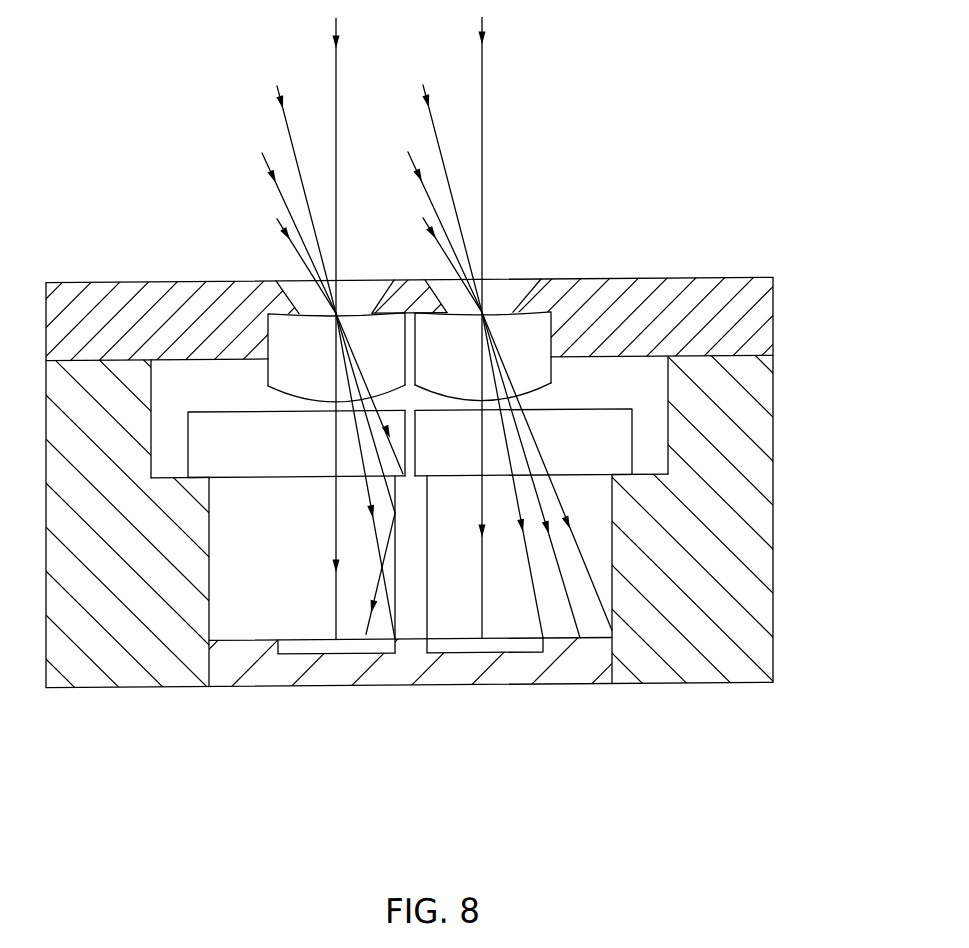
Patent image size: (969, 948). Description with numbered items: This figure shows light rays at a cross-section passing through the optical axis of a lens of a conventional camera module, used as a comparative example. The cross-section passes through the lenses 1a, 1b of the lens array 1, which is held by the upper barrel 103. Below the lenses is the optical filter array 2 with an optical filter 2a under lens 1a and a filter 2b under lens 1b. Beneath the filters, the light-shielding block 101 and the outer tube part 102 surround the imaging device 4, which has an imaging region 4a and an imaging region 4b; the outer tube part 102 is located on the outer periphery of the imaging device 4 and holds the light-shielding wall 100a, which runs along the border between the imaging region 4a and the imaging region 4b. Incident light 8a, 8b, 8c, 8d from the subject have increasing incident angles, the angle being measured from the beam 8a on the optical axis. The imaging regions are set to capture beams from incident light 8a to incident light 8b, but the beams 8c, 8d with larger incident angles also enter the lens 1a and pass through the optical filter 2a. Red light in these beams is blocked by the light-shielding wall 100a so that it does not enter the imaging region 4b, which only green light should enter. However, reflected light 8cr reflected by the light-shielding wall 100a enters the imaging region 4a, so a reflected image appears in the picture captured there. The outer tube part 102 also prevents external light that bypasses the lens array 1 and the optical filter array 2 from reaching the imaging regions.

The lens array 1 is at (359, 309).
The lens 1a is at (278, 345).
The lens 1b is at (507, 331).
The optical filter array 2 is at (354, 346).
The optical filter 2a is at (197, 431).
The filter 2b is at (585, 428).
The imaging device 4 is at (405, 700).
The imaging region 4a is at (291, 651).
The imaging region 4b is at (518, 647).
The incident light 8a is at (336, 92).
The incident light 8b is at (290, 158).
The incident light 8c is at (282, 160).
The incident light 8d is at (298, 258).
The reflected light 8cr is at (366, 634).
The light-shielding wall 100a is at (414, 651).
The light-shielding block 101 is at (773, 510).
The outer tube part 102 is at (707, 659).
The upper barrel 103 is at (773, 320).